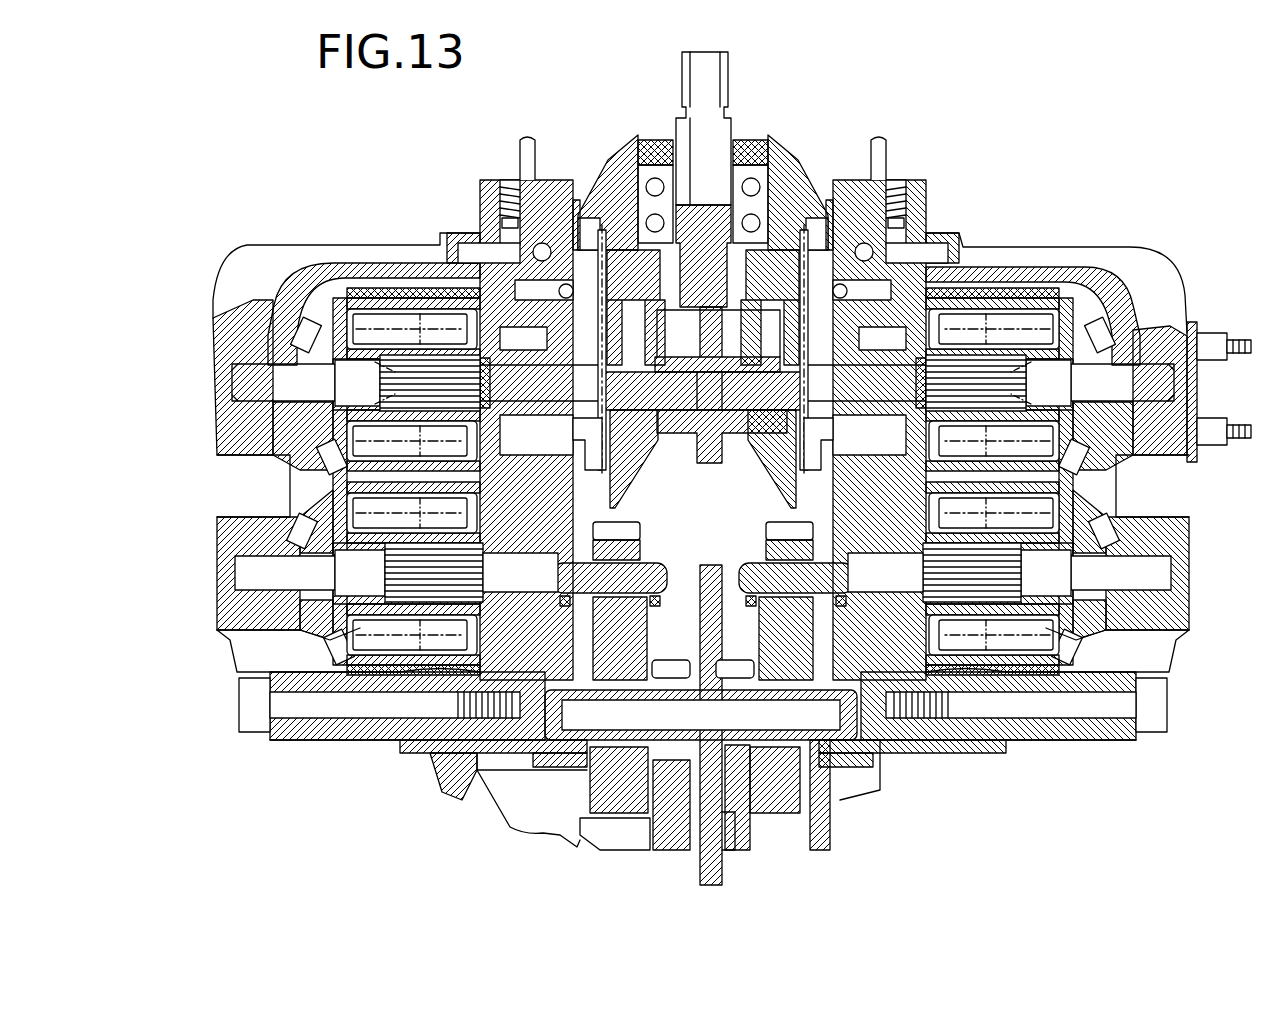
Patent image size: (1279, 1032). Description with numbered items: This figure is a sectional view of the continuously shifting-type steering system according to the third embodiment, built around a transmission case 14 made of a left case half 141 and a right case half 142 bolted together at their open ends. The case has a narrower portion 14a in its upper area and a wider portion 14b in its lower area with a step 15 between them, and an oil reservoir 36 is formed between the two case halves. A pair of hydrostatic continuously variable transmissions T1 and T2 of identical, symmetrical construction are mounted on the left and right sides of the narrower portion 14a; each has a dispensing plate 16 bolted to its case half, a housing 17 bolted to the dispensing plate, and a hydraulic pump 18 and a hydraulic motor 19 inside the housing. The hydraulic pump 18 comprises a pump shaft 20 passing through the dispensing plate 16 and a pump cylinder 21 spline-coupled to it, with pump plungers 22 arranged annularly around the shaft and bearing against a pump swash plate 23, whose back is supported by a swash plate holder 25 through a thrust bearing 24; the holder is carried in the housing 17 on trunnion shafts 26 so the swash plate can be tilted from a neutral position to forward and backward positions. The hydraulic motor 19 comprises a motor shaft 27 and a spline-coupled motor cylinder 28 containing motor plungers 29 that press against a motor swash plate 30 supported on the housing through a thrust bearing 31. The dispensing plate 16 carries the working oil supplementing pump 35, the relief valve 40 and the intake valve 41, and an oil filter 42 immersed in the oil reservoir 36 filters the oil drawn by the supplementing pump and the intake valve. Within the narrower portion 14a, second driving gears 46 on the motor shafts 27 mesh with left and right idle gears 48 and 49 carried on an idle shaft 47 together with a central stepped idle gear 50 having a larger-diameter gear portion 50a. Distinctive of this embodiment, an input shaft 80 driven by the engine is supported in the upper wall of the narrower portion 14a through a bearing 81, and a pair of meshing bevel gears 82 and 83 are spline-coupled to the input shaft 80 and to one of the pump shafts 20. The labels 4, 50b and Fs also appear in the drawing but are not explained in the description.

The differential 4 is at (582, 792).
The transmission case 14 is at (607, 168).
The left case half 141 is at (655, 165).
The right case half 142 is at (770, 160).
The narrower portion 14a is at (818, 185).
The wider portion 14b is at (453, 782).
The step 15 is at (436, 760).
The dispensing plate 16 is at (482, 182).
The housing 17 is at (306, 290).
The hydraulic pump 18 is at (400, 298).
The hydraulic motor 19 is at (392, 690).
The pump shaft 20 is at (232, 383).
The pump cylinder 21 is at (436, 305).
The pump plungers 22 is at (346, 276).
The pump swash plate 23 is at (305, 330).
The thrust bearing 24 is at (330, 458).
The swash plate holder 25 is at (234, 308).
The trunnion shafts 26 is at (395, 375).
The motor shaft 27 is at (703, 573).
The motor cylinder 28 is at (425, 676).
The motor plungers 29 is at (340, 630).
The motor swash plate 30 is at (398, 582).
The thrust bearing 31 is at (300, 503).
The working oil supplementing pump 35 is at (566, 430).
The oil reservoir 36 is at (577, 215).
The relief valve 40 is at (541, 247).
The intake valve 41 is at (652, 305).
The oil filter 42 is at (655, 330).
The second driving gears 46 is at (625, 545).
The idle shaft 47 is at (762, 700).
The left idle gear 48 is at (643, 794).
The right idle gear 49 is at (786, 796).
The central stepped idle gear 50 is at (699, 598).
The larger-diameter gear portion 50a is at (712, 862).
The shaft flange 50b is at (675, 660).
The input shaft 80 is at (690, 78).
The bearing 81 is at (760, 185).
The bevel gear 82 is at (770, 360).
The bevel gear 83 is at (640, 476).
The final drive unit Fs is at (980, 180).
The hydrostatic continuously variable transmission T1 is at (360, 242).
The hydrostatic continuously variable transmission T2 is at (1035, 242).